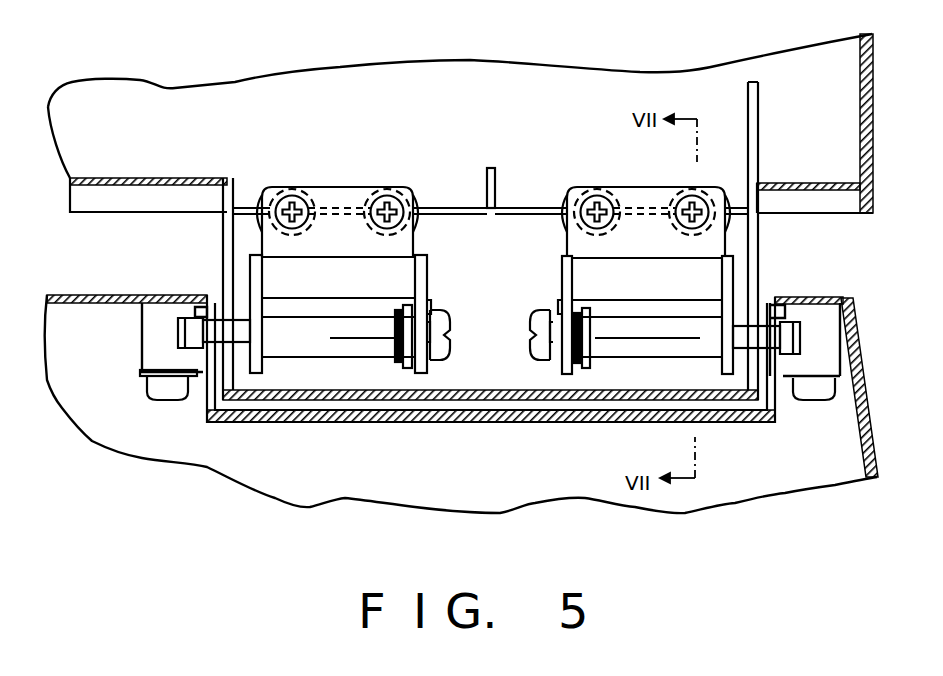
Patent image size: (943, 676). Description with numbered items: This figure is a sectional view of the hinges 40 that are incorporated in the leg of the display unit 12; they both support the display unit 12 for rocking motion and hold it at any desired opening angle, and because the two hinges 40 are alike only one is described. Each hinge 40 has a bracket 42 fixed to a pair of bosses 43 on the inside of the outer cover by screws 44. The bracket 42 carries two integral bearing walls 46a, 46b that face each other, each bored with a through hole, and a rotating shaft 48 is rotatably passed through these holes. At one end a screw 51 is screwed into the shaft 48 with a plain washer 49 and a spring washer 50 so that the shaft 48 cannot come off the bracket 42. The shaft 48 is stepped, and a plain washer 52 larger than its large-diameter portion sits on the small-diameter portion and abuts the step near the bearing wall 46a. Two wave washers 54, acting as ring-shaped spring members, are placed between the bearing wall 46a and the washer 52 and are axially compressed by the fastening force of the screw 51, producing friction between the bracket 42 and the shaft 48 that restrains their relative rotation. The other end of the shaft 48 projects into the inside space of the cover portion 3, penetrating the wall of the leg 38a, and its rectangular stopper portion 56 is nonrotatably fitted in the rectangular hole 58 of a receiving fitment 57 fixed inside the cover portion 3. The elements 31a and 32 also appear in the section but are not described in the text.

The cover portion 3 is at (867, 367).
The display unit 12 is at (847, 113).
The inner tray bottom 31a is at (485, 397).
The base tray 32 is at (302, 407).
The leg 38a is at (213, 255).
The hinge 40 is at (240, 238).
The bracket 42 is at (340, 205).
The boss 43 is at (292, 189).
The screw 44 is at (268, 198).
The bearing wall 46a is at (425, 273).
The bearing wall 46b is at (253, 287).
The rotating shaft 48 is at (353, 340).
The plain washer 49 is at (428, 303).
The spring washer 50 is at (451, 343).
The screw 51 is at (527, 320).
The plain washer 52 is at (388, 365).
The wave washer 54 is at (405, 320).
The stopper portion 56 is at (180, 332).
The receiving fitment 57 is at (150, 380).
The rectangular hole 58 is at (197, 343).